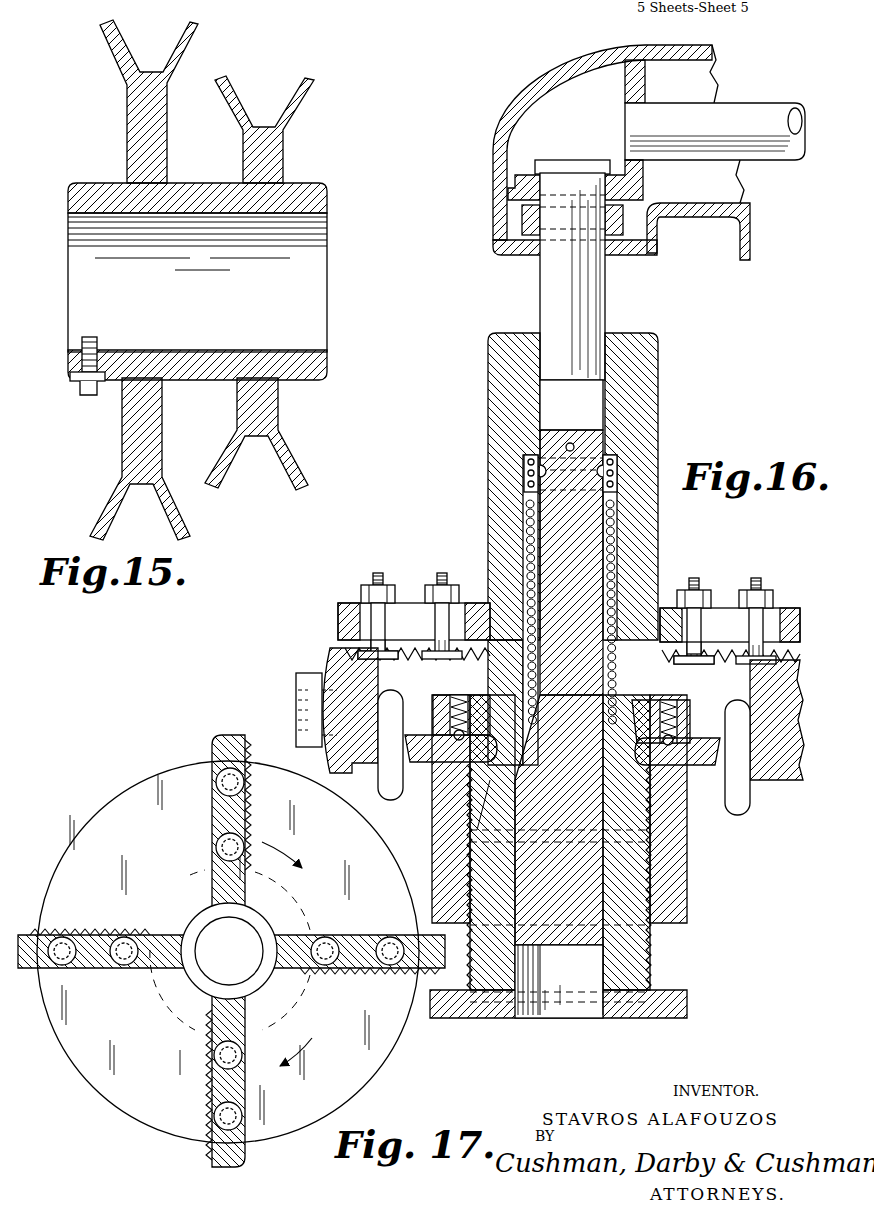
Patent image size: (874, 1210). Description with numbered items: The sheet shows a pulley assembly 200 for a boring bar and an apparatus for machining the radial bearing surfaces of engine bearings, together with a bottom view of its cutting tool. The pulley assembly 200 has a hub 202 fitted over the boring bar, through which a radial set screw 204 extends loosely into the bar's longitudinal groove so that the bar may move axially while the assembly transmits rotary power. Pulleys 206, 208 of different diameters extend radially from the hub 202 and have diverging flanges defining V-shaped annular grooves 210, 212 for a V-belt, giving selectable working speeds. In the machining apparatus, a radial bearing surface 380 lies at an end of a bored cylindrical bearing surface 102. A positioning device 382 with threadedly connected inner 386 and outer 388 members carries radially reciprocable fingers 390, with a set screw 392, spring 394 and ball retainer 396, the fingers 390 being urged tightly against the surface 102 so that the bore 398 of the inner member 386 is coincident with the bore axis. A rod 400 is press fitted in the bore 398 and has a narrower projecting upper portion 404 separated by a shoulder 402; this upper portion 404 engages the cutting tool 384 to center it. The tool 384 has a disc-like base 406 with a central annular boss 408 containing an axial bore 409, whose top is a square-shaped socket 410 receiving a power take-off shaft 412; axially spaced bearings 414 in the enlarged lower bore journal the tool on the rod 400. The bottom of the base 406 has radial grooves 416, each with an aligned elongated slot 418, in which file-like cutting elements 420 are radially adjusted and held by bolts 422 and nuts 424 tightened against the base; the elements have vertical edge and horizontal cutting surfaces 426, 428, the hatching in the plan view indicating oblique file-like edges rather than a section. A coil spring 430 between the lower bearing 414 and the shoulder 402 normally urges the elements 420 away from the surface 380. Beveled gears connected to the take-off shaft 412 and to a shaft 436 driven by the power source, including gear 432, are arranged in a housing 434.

In FIG. 15, the pulley assembly 200 is at (229, 290).
In FIG. 15, the hub 202 is at (312, 357).
In FIG. 15, the radial set screw 204 is at (128, 303).
In FIG. 15, the pulley 206 is at (268, 158).
In FIG. 15, the pulley 208 is at (138, 125).
In FIG. 15, the V-shaped annular groove 210 is at (268, 92).
In FIG. 15, the V-shaped annular groove 212 is at (142, 47).
In FIG. 16, the cylindrical crankshaft bearing surface 102 is at (330, 668).
In FIG. 16, the radial bearing surface 380 is at (332, 645).
In FIG. 16, the positioning device 382 is at (692, 890).
In FIG. 16, the cutting tool 384 is at (634, 687).
In FIG. 16, the inner member 386 is at (640, 966).
In FIG. 16, the outer member 388 is at (612, 856).
In FIG. 16, the radially reciprocable fingers 390 is at (427, 740).
In FIG. 16, the set screw 392 is at (470, 700).
In FIG. 16, the spring 394 is at (470, 727).
In FIG. 16, the ball retainer 396 is at (660, 755).
In FIG. 16, the bore 398 is at (522, 950).
In FIG. 16, the rod 400 is at (580, 903).
In FIG. 16, the shoulder 402 is at (528, 690).
In FIG. 16, the projecting upper portion 404 is at (596, 533).
In FIG. 16, the disc-like base 406 is at (470, 593).
In FIG. 17, the disc-like base 406 is at (120, 803).
In FIG. 16, the annular boss 408 is at (645, 412).
In FIG. 16, the axial bore 409 is at (518, 518).
In FIG. 16, the square-shaped socket 410 is at (545, 353).
In FIG. 16, the power take-off shaft 412 is at (592, 318).
In FIG. 16, the bearings 414 is at (620, 470).
In FIG. 16, the radial grooves 416 is at (417, 640).
In FIG. 17, the radial grooves 416 is at (213, 888).
In FIG. 16, the elongated slot 418 is at (398, 603).
In FIG. 16, the file-like cutting element 420 is at (417, 658).
In FIG. 17, the file-like cutting element 420 is at (248, 800).
In FIG. 16, the bolts 422 is at (378, 573).
In FIG. 16, the nuts 424 is at (372, 603).
In FIG. 17, the vertical edge cutting surface 426 is at (250, 770).
In FIG. 17, the horizontal cutting surface 428 is at (220, 818).
In FIG. 16, the coil spring 430 is at (518, 175).
In FIG. 16, the beveled gear 432 is at (627, 88).
In FIG. 16, the housing 434 is at (497, 143).
In FIG. 16, the shaft 436 is at (773, 150).